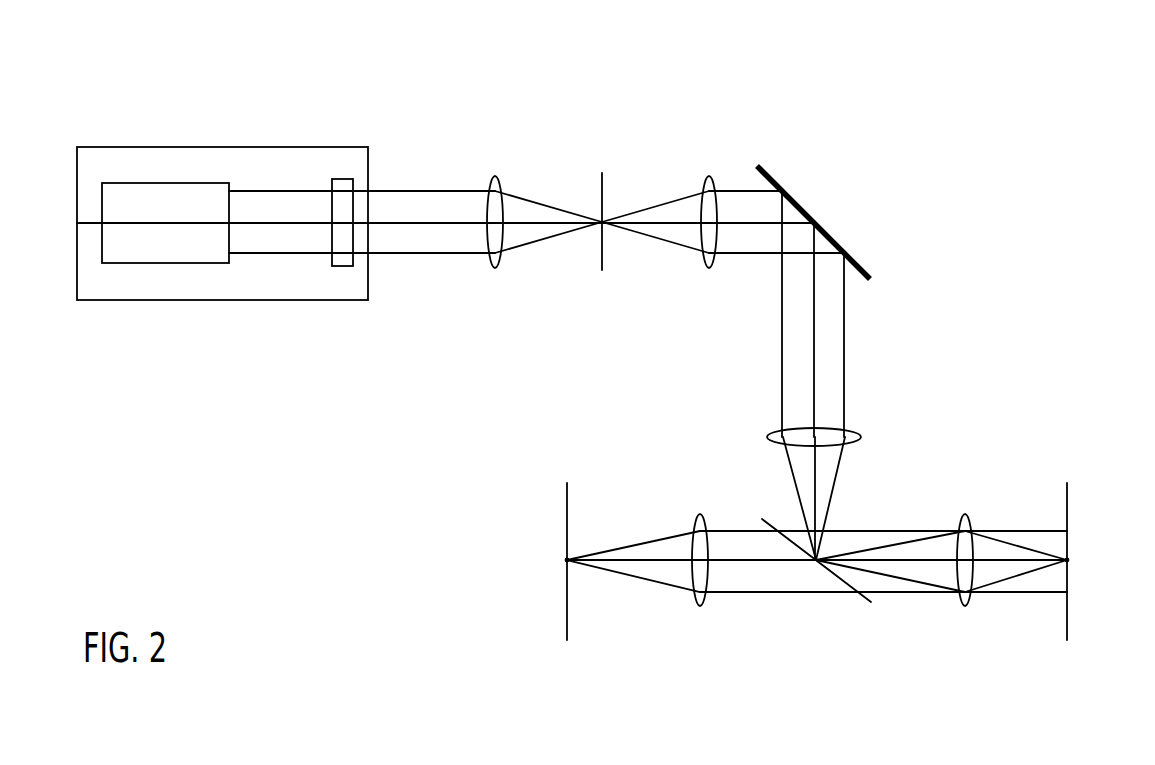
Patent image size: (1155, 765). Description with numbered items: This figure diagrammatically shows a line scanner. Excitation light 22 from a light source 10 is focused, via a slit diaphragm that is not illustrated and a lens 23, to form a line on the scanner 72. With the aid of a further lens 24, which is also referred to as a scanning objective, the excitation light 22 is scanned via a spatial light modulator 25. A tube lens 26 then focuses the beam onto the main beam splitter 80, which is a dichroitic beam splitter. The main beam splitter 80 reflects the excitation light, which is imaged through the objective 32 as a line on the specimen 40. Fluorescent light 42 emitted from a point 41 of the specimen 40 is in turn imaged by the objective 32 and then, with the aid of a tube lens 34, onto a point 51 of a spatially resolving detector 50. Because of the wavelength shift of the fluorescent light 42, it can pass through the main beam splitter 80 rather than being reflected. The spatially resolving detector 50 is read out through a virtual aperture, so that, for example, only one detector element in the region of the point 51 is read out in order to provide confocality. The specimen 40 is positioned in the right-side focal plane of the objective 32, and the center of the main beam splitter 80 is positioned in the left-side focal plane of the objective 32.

The light source 10 is at (192, 153).
The excitation light 22 is at (413, 245).
The lens 23 is at (495, 175).
The lens 24 is at (707, 175).
The spatial light modulator 25 is at (782, 173).
The tube lens 26 is at (857, 433).
The scanner 72 is at (600, 263).
The spatially resolving detector 50 is at (565, 497).
The point 51 is at (565, 561).
The tube lens 34 is at (700, 607).
The main beam splitter 80 is at (866, 603).
The objective 32 is at (973, 513).
The specimen 40 is at (1070, 492).
The point 41 is at (1070, 560).
The fluorescent light 42 is at (1022, 577).